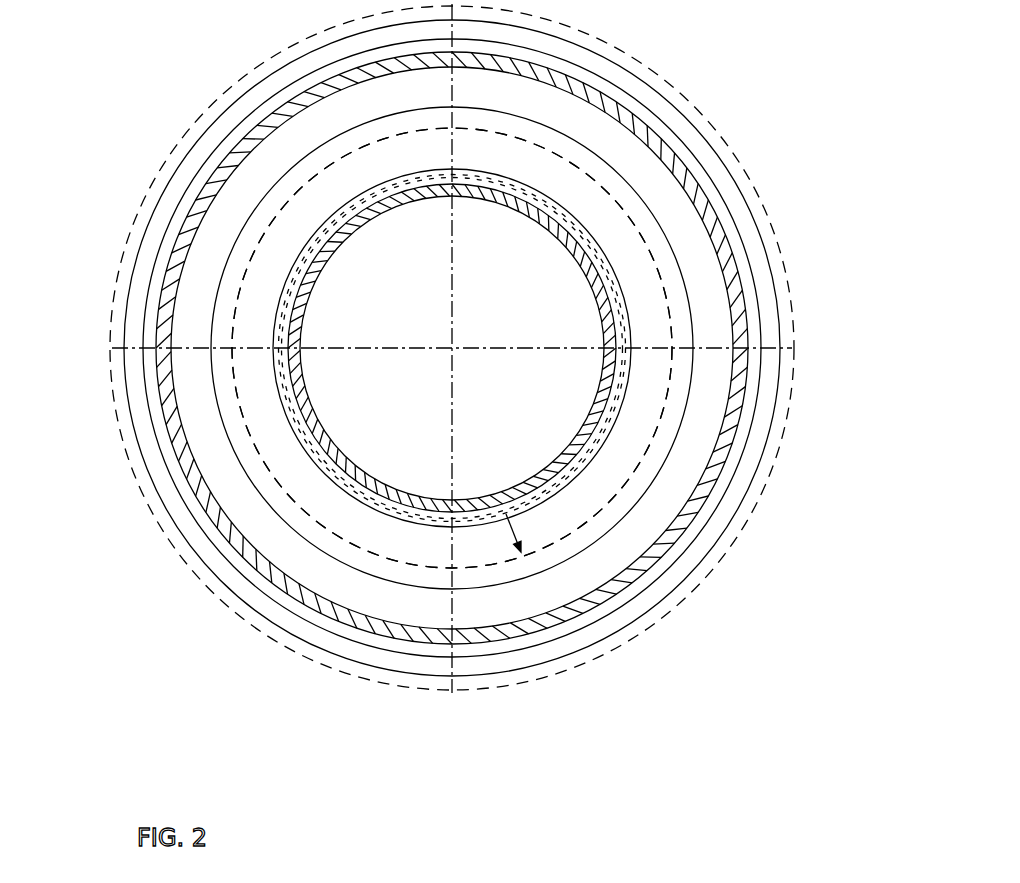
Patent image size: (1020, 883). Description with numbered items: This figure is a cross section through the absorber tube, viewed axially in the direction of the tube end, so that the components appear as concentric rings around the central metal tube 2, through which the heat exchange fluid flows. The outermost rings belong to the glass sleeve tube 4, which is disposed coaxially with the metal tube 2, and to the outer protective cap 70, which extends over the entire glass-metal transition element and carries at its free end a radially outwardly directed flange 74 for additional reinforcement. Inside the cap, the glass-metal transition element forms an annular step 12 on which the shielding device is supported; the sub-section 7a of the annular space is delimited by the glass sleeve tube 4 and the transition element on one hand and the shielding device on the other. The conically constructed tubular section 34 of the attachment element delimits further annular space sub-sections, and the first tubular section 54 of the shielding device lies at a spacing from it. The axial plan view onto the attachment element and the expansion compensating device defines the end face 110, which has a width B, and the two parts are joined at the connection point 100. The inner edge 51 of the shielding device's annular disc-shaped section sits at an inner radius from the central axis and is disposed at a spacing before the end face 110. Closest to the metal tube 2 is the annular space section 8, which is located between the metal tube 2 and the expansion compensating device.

The radially outwardly directed flange 74 is at (190, 133).
The outer protective cap 70 is at (158, 197).
The glass sleeve tube 4 is at (167, 388).
The annular step 12 is at (157, 288).
The first tubular section 54 is at (258, 492).
The conically constructed tubular section 34 is at (589, 168).
The end face 110 is at (353, 527).
The inner edge 51 is at (590, 235).
The connection point 100 is at (622, 325).
The annular space section 8 is at (617, 385).
The metal tube 2 is at (573, 453).
The width B is at (519, 528).
The sub-section 7a is at (490, 102).